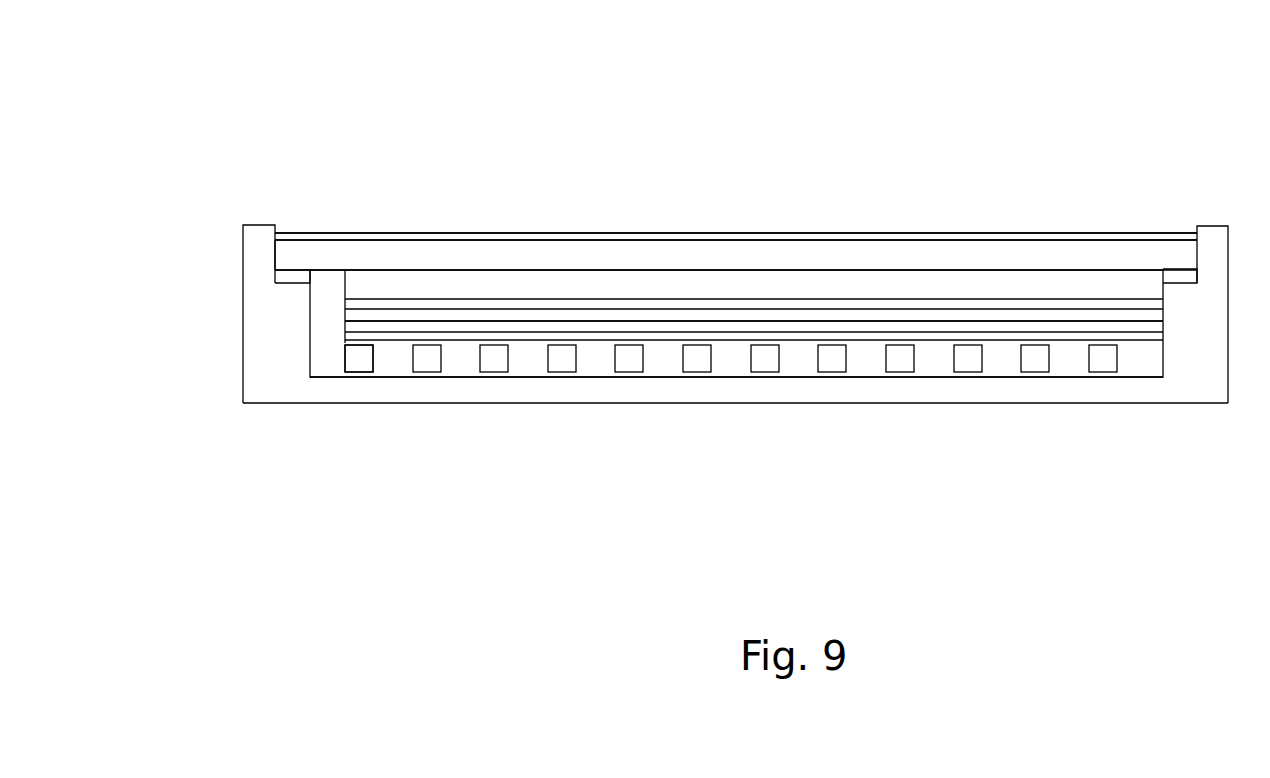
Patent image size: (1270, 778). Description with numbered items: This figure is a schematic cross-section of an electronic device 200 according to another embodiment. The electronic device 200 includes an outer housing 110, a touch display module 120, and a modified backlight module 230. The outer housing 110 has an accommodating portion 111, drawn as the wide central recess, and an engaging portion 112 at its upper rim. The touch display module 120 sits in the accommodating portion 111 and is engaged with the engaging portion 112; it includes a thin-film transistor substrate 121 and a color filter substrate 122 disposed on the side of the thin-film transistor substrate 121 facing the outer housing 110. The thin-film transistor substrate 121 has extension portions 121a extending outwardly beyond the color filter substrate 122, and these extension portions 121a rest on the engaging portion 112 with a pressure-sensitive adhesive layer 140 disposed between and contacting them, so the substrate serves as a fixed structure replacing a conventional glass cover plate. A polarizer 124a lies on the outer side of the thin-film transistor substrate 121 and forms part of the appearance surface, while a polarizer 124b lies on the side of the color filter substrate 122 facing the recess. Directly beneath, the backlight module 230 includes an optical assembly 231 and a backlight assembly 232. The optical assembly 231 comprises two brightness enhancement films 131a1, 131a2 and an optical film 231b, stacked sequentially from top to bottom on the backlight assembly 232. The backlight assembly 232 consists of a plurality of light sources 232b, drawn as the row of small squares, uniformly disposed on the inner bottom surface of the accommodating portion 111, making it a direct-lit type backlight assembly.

The electronic device 200 is at (268, 67).
The outer housing 110 is at (258, 235).
The accommodating portion 111 is at (302, 318).
The engaging portion 112 is at (282, 290).
The pressure-sensitive adhesive layer 140 is at (278, 277).
The touch display module 120 is at (1048, 196).
The thin-film transistor substrate 121 is at (808, 250).
The extension portions 121a is at (278, 252).
The color filter substrate 122 is at (748, 278).
The polarizer 124a is at (888, 235).
The polarizer 124b is at (680, 305).
The brightness enhancement film 131a1 is at (786, 317).
The brightness enhancement film 131a2 is at (692, 327).
The optical assembly 231 is at (825, 447).
The optical film 231b is at (603, 340).
The backlight assembly 232 is at (431, 390).
The light sources 232b is at (360, 363).
The backlight module 230 is at (713, 495).